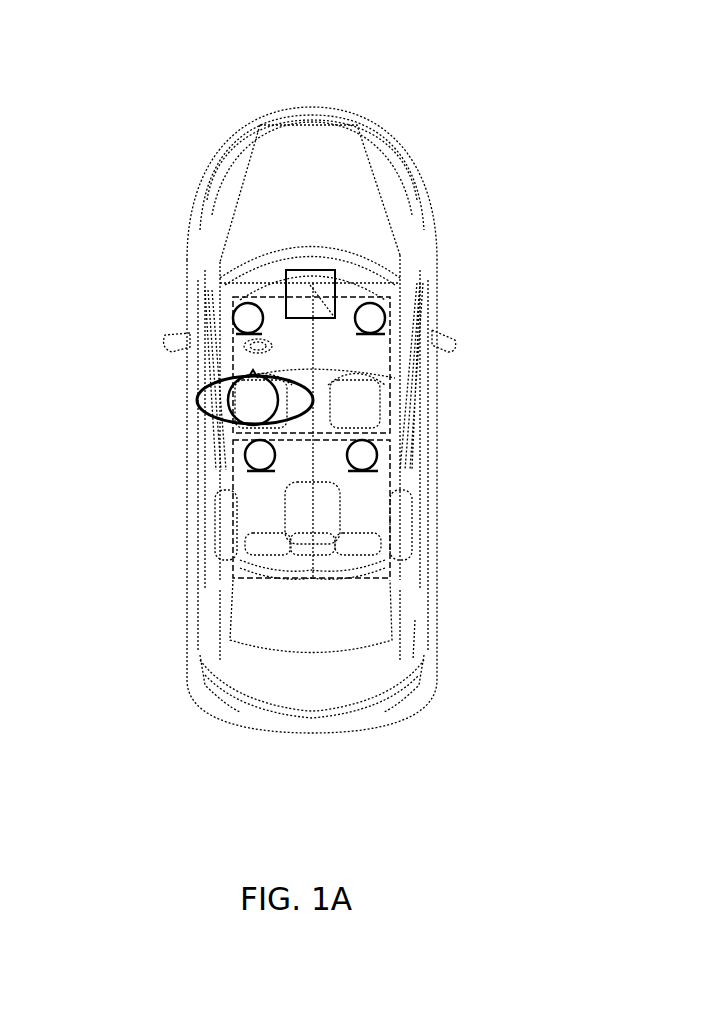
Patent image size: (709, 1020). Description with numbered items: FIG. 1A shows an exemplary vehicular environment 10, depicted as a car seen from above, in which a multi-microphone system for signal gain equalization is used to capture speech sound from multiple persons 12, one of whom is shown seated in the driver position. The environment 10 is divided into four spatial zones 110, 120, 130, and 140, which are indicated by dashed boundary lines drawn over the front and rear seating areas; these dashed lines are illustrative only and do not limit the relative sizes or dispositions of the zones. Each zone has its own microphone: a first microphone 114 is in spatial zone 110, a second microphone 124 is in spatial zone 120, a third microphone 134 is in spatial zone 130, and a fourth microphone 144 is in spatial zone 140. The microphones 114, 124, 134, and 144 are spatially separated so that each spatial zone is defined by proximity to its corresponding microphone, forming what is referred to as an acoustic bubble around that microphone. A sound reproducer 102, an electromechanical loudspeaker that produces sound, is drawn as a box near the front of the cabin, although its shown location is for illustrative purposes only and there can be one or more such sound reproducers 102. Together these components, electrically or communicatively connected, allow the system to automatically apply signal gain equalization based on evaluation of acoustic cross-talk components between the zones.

The environment 10 is at (243, 262).
The persons 12 is at (243, 397).
The sound reproducer 102 is at (332, 280).
The spatial zone 110 is at (250, 355).
The first microphone 114 is at (248, 313).
The spatial zone 120 is at (362, 400).
The second microphone 124 is at (385, 317).
The spatial zone 130 is at (270, 512).
The third microphone 134 is at (263, 455).
The spatial zone 140 is at (368, 522).
The fourth microphone 144 is at (372, 460).